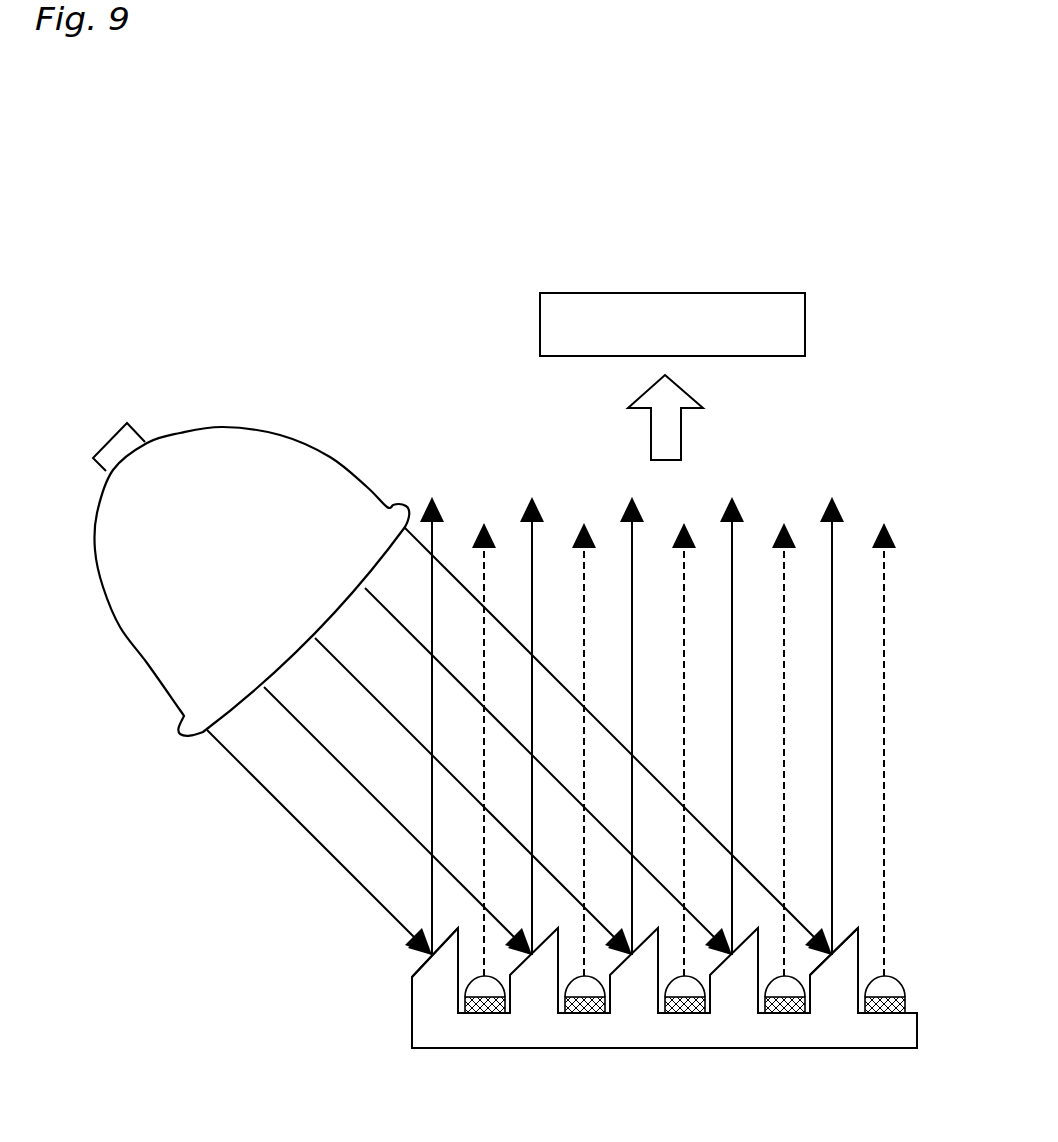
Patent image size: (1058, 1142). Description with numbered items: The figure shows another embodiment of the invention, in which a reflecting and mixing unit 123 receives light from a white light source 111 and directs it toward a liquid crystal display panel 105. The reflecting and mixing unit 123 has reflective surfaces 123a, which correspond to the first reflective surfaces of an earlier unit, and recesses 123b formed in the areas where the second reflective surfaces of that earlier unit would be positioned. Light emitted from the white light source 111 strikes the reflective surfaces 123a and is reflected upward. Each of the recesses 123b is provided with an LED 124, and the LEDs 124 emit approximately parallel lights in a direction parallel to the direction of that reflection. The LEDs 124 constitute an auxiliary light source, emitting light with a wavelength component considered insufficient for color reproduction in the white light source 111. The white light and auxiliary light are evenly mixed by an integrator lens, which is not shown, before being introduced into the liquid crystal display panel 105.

The liquid crystal display panel 105 is at (760, 295).
The white light source 111 is at (268, 440).
The reflecting and mixing unit 123 is at (402, 1013).
The reflective surfaces 123a is at (421, 965).
The recesses 123b is at (485, 1015).
The LEDs 124 is at (583, 1015).